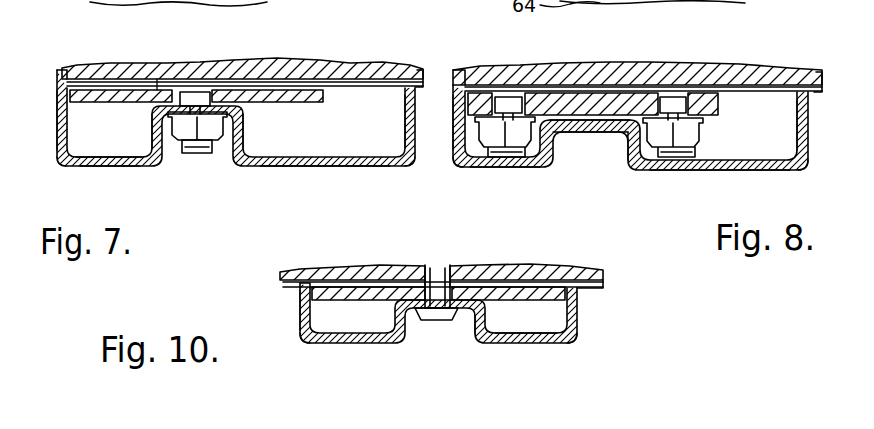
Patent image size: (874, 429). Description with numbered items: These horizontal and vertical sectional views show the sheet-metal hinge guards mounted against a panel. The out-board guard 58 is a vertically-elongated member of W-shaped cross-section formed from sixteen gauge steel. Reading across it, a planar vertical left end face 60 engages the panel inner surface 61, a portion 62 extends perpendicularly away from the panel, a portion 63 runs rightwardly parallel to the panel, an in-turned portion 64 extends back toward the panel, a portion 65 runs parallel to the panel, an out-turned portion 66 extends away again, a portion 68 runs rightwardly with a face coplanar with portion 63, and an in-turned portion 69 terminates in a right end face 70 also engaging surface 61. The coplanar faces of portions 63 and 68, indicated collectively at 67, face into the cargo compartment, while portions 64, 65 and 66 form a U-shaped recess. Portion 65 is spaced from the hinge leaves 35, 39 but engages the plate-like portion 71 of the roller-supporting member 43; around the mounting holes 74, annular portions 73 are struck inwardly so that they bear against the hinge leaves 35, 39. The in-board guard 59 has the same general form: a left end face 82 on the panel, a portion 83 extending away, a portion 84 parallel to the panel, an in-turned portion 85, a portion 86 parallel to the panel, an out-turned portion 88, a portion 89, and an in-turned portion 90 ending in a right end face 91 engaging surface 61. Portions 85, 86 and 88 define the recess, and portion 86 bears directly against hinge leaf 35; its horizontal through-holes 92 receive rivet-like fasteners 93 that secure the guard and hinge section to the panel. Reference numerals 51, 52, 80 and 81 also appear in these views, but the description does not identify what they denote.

In FIG. 7, the wall panel / plate 51 is at (323, 50).
In FIG. 10, the wall panel / plate 51 is at (538, 262).
In FIG. 8, the wall panel / plate 52 is at (745, 66).
In FIG. 7, the hinge leaf 35 is at (291, 103).
In FIG. 10, the hinge leaf 35 is at (518, 348).
In FIG. 8, the hinge leaf 39 is at (607, 64).
In FIG. 8, the roller-supporting member 43 is at (712, 122).
In FIG. 7, the out-board guard 58 is at (277, 170).
In FIG. 8, the out-board guard 58 is at (692, 171).
In FIG. 10, the in-board guard 59 is at (345, 348).
In FIG. 7, the left end face 60 is at (63, 68).
In FIG. 8, the left end face 60 is at (470, 67).
In FIG. 7, the panel inner surface 61 is at (345, 97).
In FIG. 8, the panel inner surface 61 is at (745, 98).
In FIG. 10, the panel inner surface 61 is at (595, 295).
In FIG. 7, the portion extending normally away from the panel 62 is at (58, 128).
In FIG. 8, the portion extending normally away from the panel 62 is at (453, 131).
In FIG. 7, the portion parallel to panel surface 63 is at (72, 168).
In FIG. 8, the portion parallel to panel surface 63 is at (470, 170).
In FIG. 7, the in-turned portion 64 is at (148, 133).
In FIG. 8, the in-turned portion 64 is at (560, 150).
In FIG. 7, the recess bottom portion 65 is at (162, 146).
In FIG. 8, the recess bottom portion 65 is at (585, 133).
In FIG. 7, the out-turned portion 66 is at (246, 140).
In FIG. 8, the out-turned portion 66 is at (625, 146).
In FIG. 7, the coplanar surfaces 67 is at (108, 168).
In FIG. 8, the coplanar surfaces 67 is at (505, 172).
In FIG. 7, the portion parallel to panel surface 68 is at (358, 178).
In FIG. 8, the portion parallel to panel surface 68 is at (760, 181).
In FIG. 7, the in-turned portion 69 is at (402, 130).
In FIG. 8, the in-turned portion 69 is at (805, 128).
In FIG. 7, the right end face 70 is at (419, 69).
In FIG. 8, the right end face 70 is at (815, 70).
In FIG. 8, the plate-like portion 71 is at (737, 84).
In FIG. 7, the annular portions 73 is at (157, 72).
In FIG. 7, the mounting holes 74 is at (196, 90).
In FIG. 7, the nut 80 is at (197, 143).
In FIG. 7, the washer / bolt end 81 is at (205, 154).
In FIG. 10, the left end face 82 is at (308, 270).
In FIG. 10, the portion extending normally away from panel 83 is at (298, 298).
In FIG. 10, the portion parallel to panel surface 84 is at (318, 345).
In FIG. 10, the in-turned portion 85 is at (395, 316).
In FIG. 10, the recess bottom portion 86 is at (411, 318).
In FIG. 10, the out-turned portion 88 is at (478, 336).
In FIG. 10, the portion parallel to panel surface 89 is at (545, 350).
In FIG. 10, the in-turned portion 90 is at (582, 318).
In FIG. 10, the right end face 91 is at (586, 268).
In FIG. 10, the through-holes 92 is at (432, 270).
In FIG. 10, the rivet-like fasteners 93 is at (447, 264).